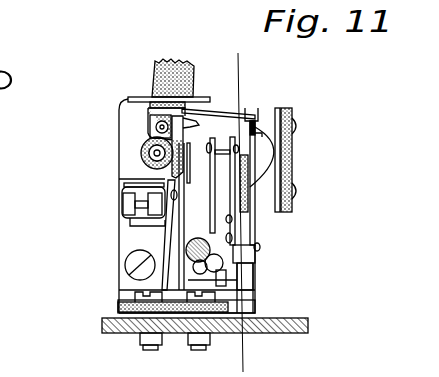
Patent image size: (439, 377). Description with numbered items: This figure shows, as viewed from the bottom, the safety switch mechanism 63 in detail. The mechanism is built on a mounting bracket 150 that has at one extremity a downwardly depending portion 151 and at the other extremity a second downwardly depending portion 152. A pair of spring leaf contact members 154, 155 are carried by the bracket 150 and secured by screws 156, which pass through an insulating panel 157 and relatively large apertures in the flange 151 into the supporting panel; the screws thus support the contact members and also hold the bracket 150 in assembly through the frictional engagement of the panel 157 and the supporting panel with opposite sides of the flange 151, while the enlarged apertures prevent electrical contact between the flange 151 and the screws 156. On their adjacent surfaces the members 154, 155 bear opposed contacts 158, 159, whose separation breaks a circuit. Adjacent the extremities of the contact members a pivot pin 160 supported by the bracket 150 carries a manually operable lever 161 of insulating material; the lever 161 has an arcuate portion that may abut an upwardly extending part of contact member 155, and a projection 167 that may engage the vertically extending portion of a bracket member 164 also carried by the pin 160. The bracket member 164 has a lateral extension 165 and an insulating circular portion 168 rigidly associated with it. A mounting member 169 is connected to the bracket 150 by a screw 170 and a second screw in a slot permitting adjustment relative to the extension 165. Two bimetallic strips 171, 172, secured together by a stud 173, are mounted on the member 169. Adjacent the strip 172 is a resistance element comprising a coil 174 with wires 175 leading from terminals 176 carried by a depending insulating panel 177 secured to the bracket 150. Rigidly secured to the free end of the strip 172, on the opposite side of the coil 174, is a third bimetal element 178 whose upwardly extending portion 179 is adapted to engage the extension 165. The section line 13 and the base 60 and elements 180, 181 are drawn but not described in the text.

The section line 13- 13 is at (232, 59).
The base plate 60 is at (290, 334).
The safety switch mechanism 63 is at (95, 194).
The mounting bracket 150 is at (128, 136).
The downwardly depending portion 151 is at (247, 312).
The second downwardly depending portion 152 is at (197, 97).
The spring leaf contact member 154 is at (165, 242).
The spring leaf contact member 155 is at (165, 218).
The screws 156 is at (118, 301).
The insulating panel 157 is at (116, 305).
The contact 158 is at (119, 179).
The contact 159 is at (196, 184).
The pivot pin 160 is at (156, 127).
The manually operable lever 161 is at (162, 60).
The bracket member 164 is at (153, 115).
The lateral extension 165 is at (252, 125).
The projection 167 is at (194, 125).
The circular portion 168 is at (145, 153).
The mounting member 169 is at (125, 262).
The screw 170 is at (128, 277).
The bimetallic strip 171 is at (198, 238).
The bimetallic strip 172 is at (256, 243).
The stud 173 is at (225, 143).
The coil 174 is at (252, 187).
The wires 175 is at (292, 230).
The terminals 176 is at (298, 124).
The insulating panel 177 is at (292, 165).
The third bimetal element 178 is at (290, 207).
The upwardly extending portion 179 is at (257, 127).
The roller 180 is at (224, 262).
The follower 181 is at (226, 280).